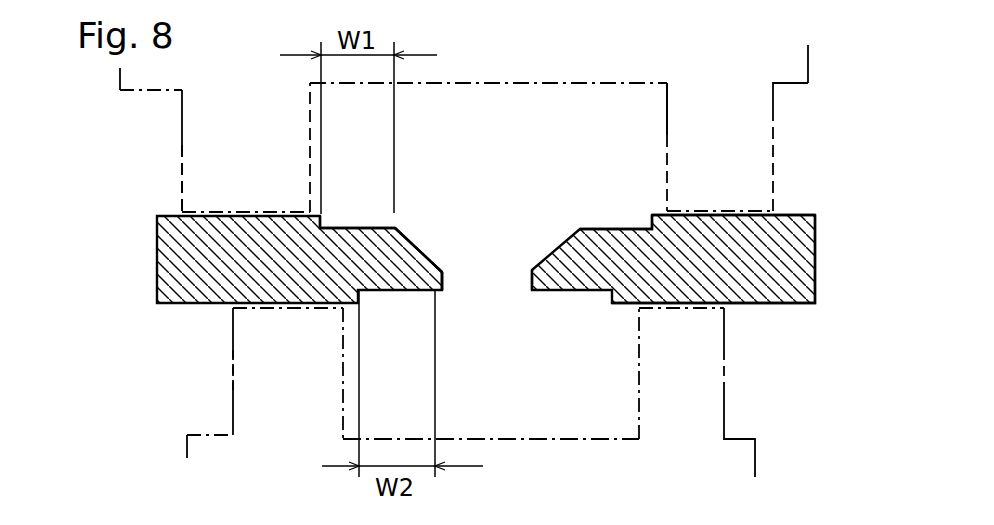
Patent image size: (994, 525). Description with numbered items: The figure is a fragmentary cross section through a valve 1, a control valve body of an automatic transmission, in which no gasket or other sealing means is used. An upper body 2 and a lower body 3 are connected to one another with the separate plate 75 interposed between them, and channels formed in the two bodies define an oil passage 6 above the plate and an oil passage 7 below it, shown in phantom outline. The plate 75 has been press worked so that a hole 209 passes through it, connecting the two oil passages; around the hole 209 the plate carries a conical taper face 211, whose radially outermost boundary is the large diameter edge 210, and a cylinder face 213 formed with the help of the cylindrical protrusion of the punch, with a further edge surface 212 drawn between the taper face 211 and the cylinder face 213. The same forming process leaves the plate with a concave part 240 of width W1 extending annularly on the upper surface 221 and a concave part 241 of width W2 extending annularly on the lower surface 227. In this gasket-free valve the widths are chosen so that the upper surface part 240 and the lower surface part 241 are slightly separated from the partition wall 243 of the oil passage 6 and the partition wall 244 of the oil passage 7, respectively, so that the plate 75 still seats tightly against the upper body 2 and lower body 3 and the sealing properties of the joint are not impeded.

The valve 1 is at (567, 53).
The upper body 2 is at (175, 107).
The lower body 3 is at (233, 423).
The oil passage 6 is at (598, 118).
The oil passage 7 is at (575, 413).
The separate plate 75 is at (218, 305).
The hole 209 is at (514, 240).
The large diameter edge 210 is at (395, 227).
The taper face 211 is at (410, 240).
The end face 212 is at (470, 247).
The cylinder face 213 is at (487, 312).
The upper surface 221 is at (787, 215).
The lower surface 227 is at (760, 307).
The concave part 240 is at (605, 228).
The concave part 241 is at (570, 292).
The partition wall 243 is at (207, 163).
The partition wall 244 is at (250, 390).